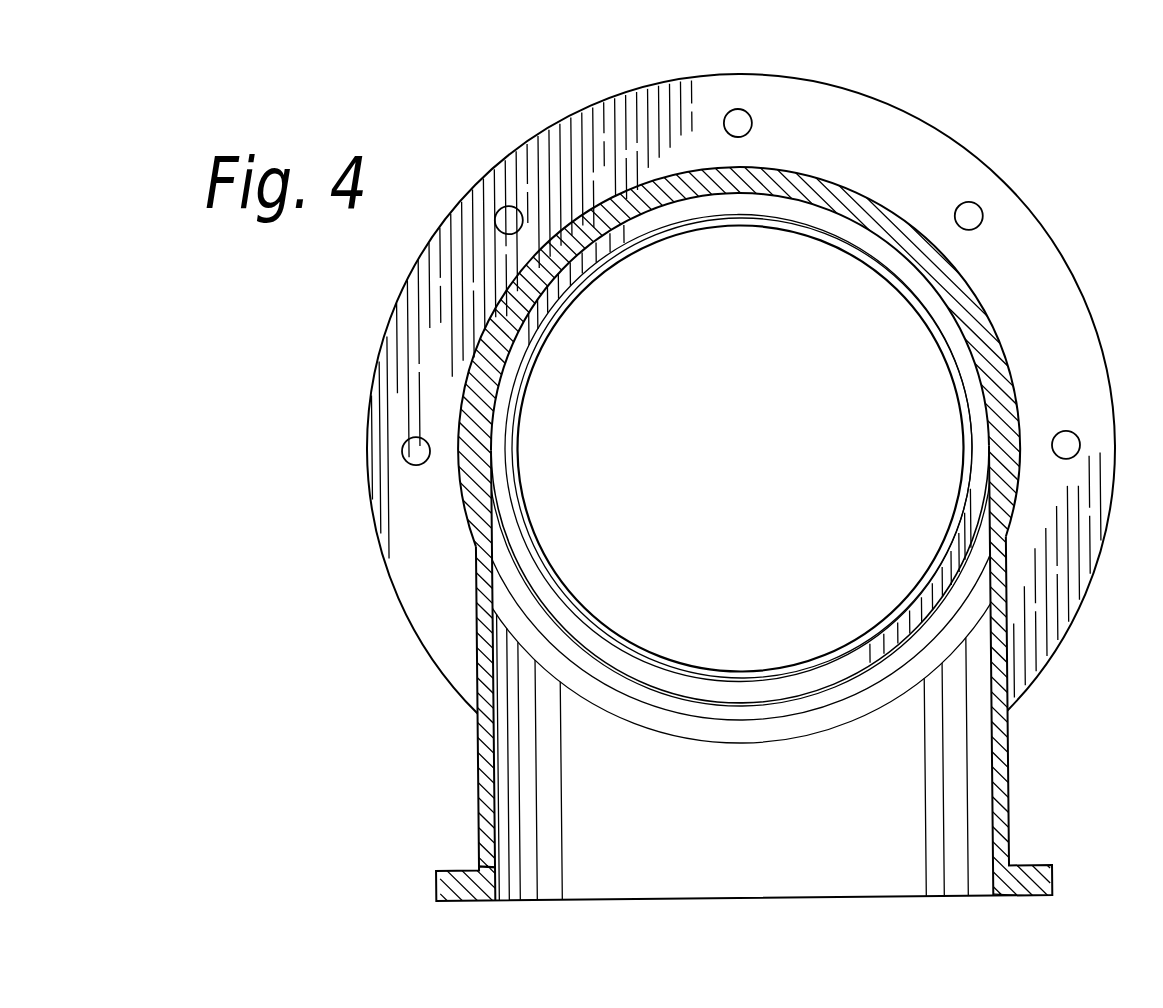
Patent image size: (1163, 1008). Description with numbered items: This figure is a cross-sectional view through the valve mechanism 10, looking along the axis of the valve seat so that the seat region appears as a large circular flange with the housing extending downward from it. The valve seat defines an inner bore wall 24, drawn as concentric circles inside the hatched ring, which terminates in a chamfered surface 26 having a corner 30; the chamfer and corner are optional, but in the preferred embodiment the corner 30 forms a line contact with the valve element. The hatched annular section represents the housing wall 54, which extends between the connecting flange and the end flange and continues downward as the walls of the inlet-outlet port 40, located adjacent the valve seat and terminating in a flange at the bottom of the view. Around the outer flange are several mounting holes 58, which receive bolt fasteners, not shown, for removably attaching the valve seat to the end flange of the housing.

The valve mechanism 10 is at (1060, 178).
The inner bore wall 24 is at (520, 413).
The chamfered surface 26 is at (565, 592).
The corner 30 is at (583, 619).
The inlet-outlet port 40 is at (975, 786).
The housing wall 54 is at (868, 206).
The mounting holes 58 is at (970, 217).